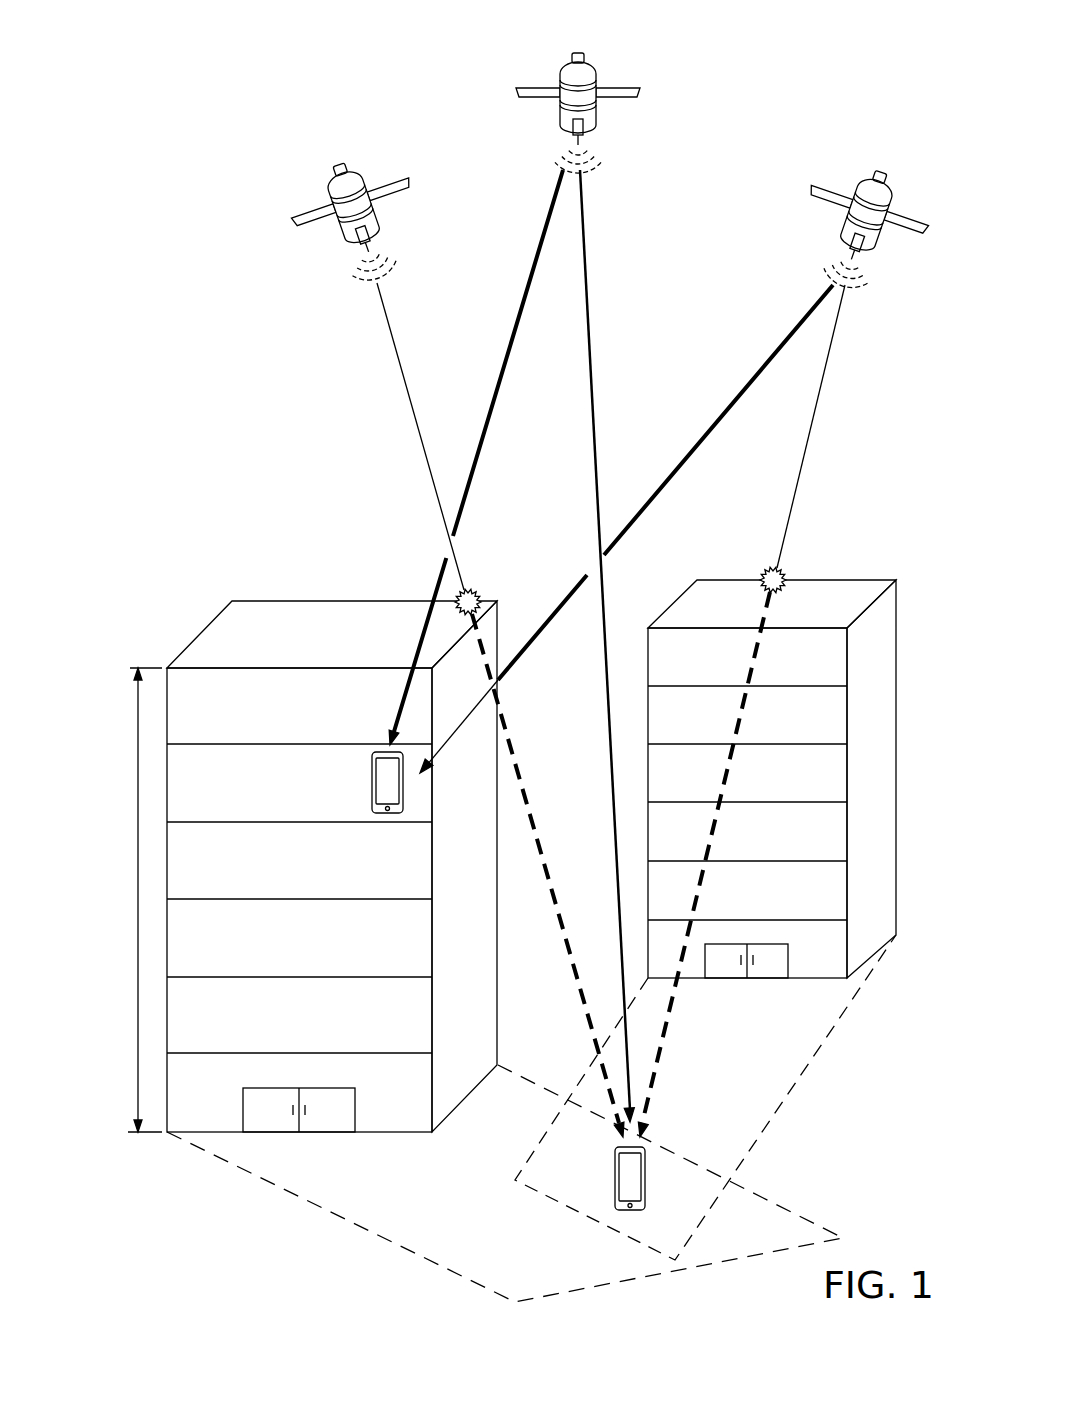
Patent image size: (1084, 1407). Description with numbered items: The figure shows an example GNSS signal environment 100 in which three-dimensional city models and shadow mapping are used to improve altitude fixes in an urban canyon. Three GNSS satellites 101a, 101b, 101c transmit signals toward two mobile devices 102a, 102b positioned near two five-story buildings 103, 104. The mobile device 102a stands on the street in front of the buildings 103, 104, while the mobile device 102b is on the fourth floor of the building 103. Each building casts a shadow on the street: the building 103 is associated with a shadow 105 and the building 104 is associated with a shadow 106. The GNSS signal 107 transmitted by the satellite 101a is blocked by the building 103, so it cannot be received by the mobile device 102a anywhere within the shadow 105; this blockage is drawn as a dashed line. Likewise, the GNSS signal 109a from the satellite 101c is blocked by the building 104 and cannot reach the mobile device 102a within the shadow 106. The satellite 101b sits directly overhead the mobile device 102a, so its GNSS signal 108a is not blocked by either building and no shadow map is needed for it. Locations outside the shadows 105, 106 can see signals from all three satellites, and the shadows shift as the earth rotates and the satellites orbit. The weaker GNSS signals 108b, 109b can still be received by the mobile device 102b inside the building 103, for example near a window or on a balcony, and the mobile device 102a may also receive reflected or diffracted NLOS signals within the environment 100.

The GNSS signal environment 100 is at (221, 78).
The GNSS satellite SV1 101a is at (313, 228).
The GNSS satellite SV2 101b is at (534, 100).
The GNSS satellite SV3 101c is at (930, 200).
The mobile device 102a is at (614, 1176).
The mobile device 102b is at (386, 816).
The building 103 is at (292, 597).
The building 104 is at (874, 571).
The shadow 105 is at (325, 1250).
The shadow 106 is at (783, 1100).
The GNSS signal 107 is at (405, 400).
The GNSS signal 108a is at (591, 262).
The GNSS signal 108b is at (529, 292).
The GNSS signal 109a is at (818, 435).
The GNSS signal 109b is at (626, 529).